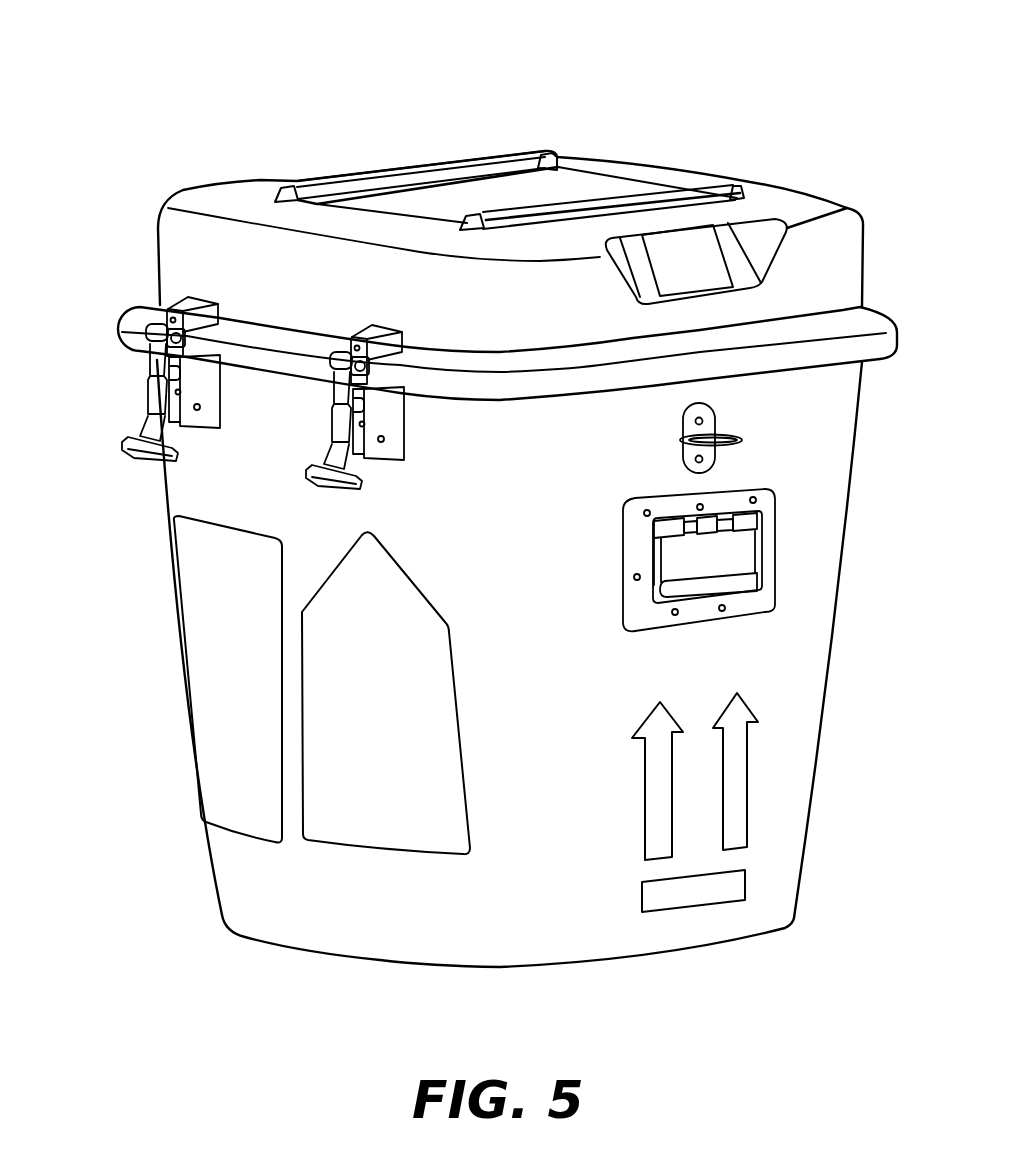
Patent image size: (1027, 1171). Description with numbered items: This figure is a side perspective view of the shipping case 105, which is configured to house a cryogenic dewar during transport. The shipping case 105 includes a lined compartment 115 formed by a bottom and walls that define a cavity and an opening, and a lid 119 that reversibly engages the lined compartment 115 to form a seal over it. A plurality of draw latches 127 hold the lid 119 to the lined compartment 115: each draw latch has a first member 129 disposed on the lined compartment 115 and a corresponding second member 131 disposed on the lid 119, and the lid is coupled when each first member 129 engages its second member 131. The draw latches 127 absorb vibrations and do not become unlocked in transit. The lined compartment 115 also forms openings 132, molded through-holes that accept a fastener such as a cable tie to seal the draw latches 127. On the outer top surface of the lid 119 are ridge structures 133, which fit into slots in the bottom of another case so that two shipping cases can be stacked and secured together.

The shipping case 105 is at (210, 78).
The lined compartment 115 is at (828, 600).
The lid 119 is at (847, 209).
The draw latches 127 is at (114, 451).
The first member 129 is at (147, 433).
The second member 131 is at (165, 308).
The openings 132 is at (212, 424).
The ridge structures 133 is at (687, 197).